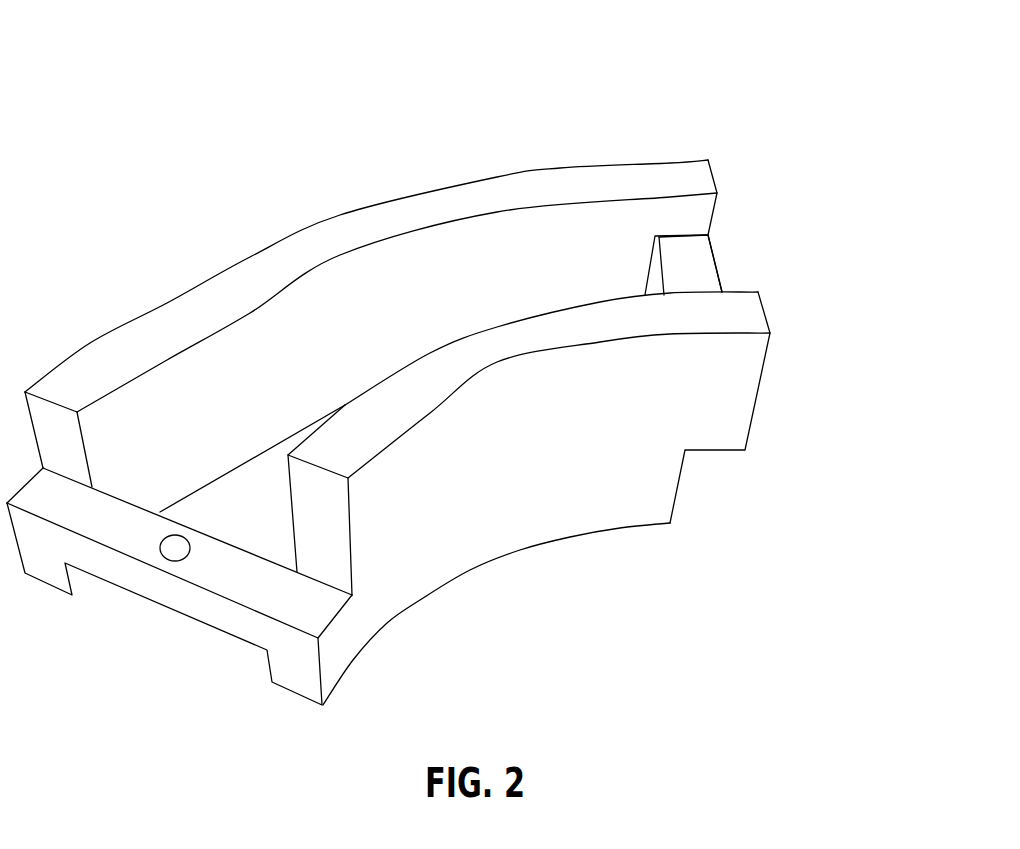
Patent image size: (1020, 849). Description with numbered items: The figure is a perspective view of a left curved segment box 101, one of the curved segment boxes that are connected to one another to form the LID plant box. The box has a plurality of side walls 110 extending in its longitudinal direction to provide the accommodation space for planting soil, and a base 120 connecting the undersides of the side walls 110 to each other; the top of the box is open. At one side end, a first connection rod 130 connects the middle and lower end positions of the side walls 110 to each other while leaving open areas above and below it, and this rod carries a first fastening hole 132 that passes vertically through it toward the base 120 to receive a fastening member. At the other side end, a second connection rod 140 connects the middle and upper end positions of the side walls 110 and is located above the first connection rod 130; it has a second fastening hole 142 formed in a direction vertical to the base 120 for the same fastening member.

The left curved segment box 101 is at (338, 54).
The side wall 110 is at (474, 277).
The base 120 is at (519, 491).
The first connection rod 130 is at (179, 543).
The first fastening hole 132 is at (134, 633).
The second connection rod 140 is at (774, 168).
The second fastening hole 142 is at (781, 219).